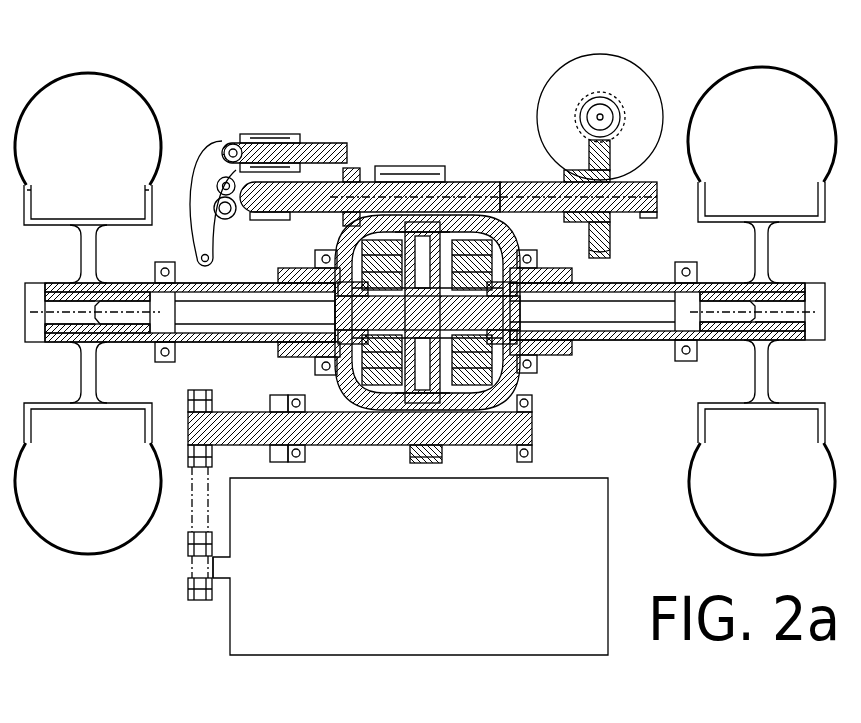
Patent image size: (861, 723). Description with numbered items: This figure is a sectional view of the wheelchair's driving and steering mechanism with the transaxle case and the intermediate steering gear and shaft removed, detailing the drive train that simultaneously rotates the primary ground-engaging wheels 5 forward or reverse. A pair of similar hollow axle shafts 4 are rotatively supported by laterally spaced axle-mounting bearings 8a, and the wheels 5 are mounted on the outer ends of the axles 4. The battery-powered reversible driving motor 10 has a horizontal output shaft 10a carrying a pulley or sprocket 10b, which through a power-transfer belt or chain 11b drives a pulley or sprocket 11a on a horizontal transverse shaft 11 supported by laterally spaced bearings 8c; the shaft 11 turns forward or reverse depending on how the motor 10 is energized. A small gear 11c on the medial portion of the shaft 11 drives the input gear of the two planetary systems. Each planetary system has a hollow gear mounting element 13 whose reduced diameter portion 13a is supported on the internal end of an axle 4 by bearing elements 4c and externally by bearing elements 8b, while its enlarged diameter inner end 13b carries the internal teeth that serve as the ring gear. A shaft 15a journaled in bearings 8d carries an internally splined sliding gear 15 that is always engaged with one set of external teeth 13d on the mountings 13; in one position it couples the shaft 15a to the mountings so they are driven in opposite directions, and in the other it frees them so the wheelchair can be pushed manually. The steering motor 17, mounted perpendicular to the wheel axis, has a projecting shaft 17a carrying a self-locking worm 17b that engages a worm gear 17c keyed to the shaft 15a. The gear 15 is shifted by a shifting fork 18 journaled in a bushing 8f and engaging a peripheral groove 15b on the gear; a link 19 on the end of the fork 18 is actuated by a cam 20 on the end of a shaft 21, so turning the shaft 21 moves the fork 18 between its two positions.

The hollow axle shaft 4 is at (212, 336).
The bearing element 4c is at (575, 272).
The ground-engaging wheel 5 is at (425, 311).
The axle-mounting bearing 8a is at (155, 352).
The bearing element 8b is at (315, 262).
The bearing 8c is at (296, 456).
The bearing 8d is at (262, 221).
The bushing 8f is at (263, 136).
The driving motor 10 is at (612, 535).
The output shaft 10a is at (221, 583).
The pulley or sprocket 10b is at (188, 595).
The transverse shaft 11 is at (247, 447).
The pulley or sprocket 11a is at (187, 446).
The power-transfer belt or chain 11b is at (192, 519).
The small gear 11c is at (440, 449).
The hollow gear mounting element 13 is at (345, 380).
The reduced diameter portion 13a is at (300, 350).
The enlarged diameter inner end 13b is at (508, 233).
The external teeth 13d is at (352, 229).
The sliding gear 15 is at (410, 166).
The shaft 15a is at (503, 180).
The peripheral groove 15b is at (353, 160).
The steering motor 17 is at (548, 80).
The projecting shaft 17a is at (603, 115).
The self-locking worm 17b is at (628, 113).
The worm gear 17c is at (612, 235).
The shifting fork 18 is at (312, 141).
The link 19 is at (195, 228).
The cam 20 is at (215, 181).
The shaft 21 is at (227, 220).